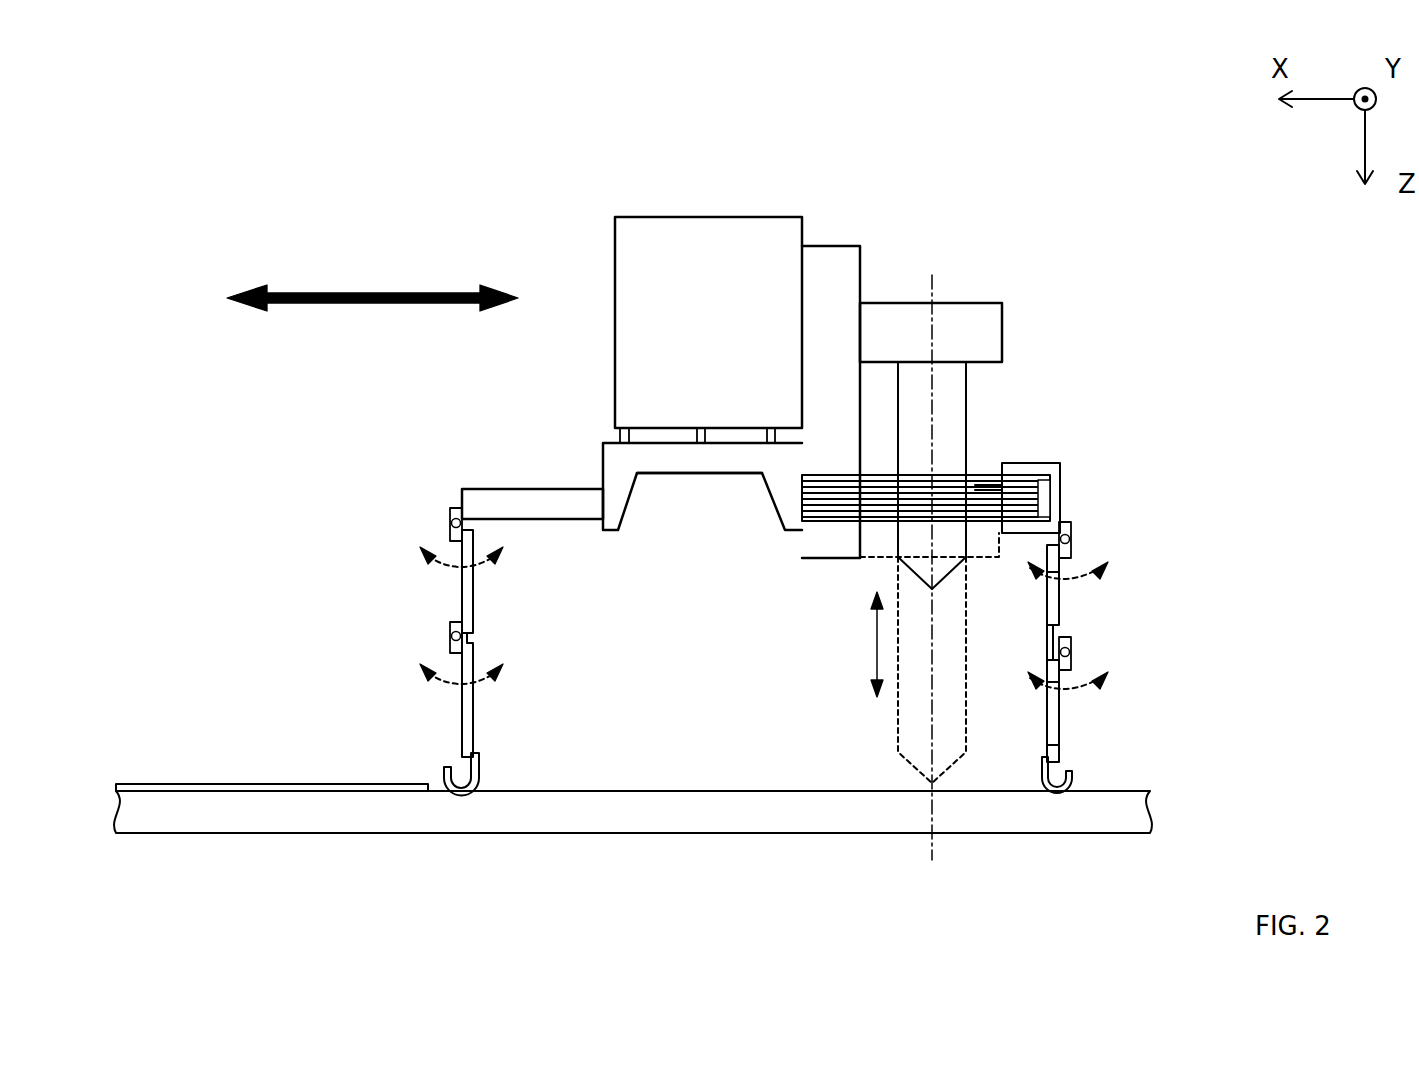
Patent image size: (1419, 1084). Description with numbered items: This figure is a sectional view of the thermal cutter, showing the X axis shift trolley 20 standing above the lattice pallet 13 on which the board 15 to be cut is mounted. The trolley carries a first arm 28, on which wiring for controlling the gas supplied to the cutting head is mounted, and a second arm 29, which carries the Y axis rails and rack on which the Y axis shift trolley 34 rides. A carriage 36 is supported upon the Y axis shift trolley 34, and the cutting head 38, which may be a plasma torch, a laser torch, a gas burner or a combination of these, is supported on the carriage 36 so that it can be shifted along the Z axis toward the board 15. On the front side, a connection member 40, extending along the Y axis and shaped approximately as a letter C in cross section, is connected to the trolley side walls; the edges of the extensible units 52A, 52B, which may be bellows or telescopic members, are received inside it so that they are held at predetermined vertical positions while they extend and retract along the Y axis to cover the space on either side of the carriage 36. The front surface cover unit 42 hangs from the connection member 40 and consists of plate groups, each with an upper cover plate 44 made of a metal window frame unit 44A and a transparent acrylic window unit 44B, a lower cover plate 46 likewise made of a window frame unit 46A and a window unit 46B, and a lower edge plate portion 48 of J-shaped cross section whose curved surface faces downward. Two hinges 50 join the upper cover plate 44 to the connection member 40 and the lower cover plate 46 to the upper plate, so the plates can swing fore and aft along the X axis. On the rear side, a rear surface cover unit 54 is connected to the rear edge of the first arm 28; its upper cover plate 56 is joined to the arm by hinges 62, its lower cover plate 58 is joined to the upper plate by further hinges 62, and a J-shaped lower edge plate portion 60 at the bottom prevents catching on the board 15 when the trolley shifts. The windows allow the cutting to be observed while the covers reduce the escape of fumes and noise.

The lattice pallet 13 is at (437, 825).
The board 15 is at (273, 783).
The X axis shift trolley 20 is at (1068, 242).
The first arm 28 is at (513, 505).
The second arm 29 is at (708, 462).
The Y axis shift trolley 34 is at (748, 259).
The carriage 36 is at (843, 268).
The cutting head 38 is at (945, 433).
The connection member 40 is at (1062, 475).
The front surface cover unit 42 is at (1260, 610).
The upper cover plate 44 is at (1219, 523).
The window frame unit 44A is at (1060, 570).
The window unit 44B is at (1053, 617).
The lower cover plate 46 is at (1229, 680).
The window frame unit 46A is at (1053, 718).
The window unit 46B is at (1053, 742).
The lower edge plate portion 48 is at (1072, 786).
The hinge 50 is at (1072, 535).
The extensible unit 52A is at (975, 485).
The extensible unit 52B is at (975, 485).
The rear surface cover unit 54 is at (258, 559).
The upper cover plate 56 is at (463, 597).
The lower cover plate 58 is at (463, 697).
The lower edge plate portion 60 is at (443, 772).
The hinge 62 is at (450, 506).